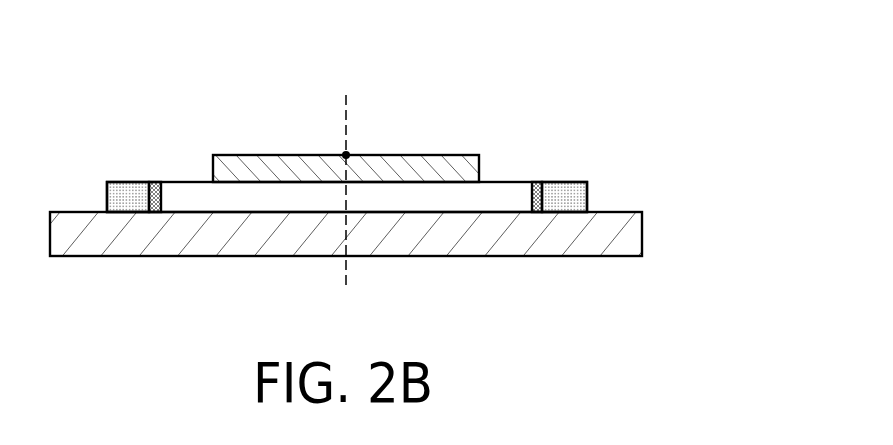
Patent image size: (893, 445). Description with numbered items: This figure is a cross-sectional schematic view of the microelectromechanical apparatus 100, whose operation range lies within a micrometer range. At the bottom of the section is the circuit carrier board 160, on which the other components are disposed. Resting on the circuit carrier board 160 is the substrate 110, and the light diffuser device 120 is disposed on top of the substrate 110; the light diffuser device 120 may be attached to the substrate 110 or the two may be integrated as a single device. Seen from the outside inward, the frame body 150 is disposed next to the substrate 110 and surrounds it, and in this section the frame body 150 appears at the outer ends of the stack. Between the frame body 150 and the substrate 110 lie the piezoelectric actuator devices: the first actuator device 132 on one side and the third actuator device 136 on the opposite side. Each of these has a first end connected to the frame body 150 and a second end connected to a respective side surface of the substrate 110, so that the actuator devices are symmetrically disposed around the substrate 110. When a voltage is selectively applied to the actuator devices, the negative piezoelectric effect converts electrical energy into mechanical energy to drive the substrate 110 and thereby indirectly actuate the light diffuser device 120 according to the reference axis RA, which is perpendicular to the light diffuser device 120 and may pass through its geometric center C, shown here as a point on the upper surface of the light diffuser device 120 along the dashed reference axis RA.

The microelectromechanical apparatus 100 is at (725, 337).
The substrate 110 is at (185, 197).
The light diffuser device 120 is at (450, 168).
The first actuator device 132 is at (155, 182).
The third actuator device 136 is at (535, 182).
The frame body 150 is at (588, 198).
The circuit carrier board 160 is at (617, 237).
The reference axis RA is at (346, 174).
The geometric center C is at (348, 152).